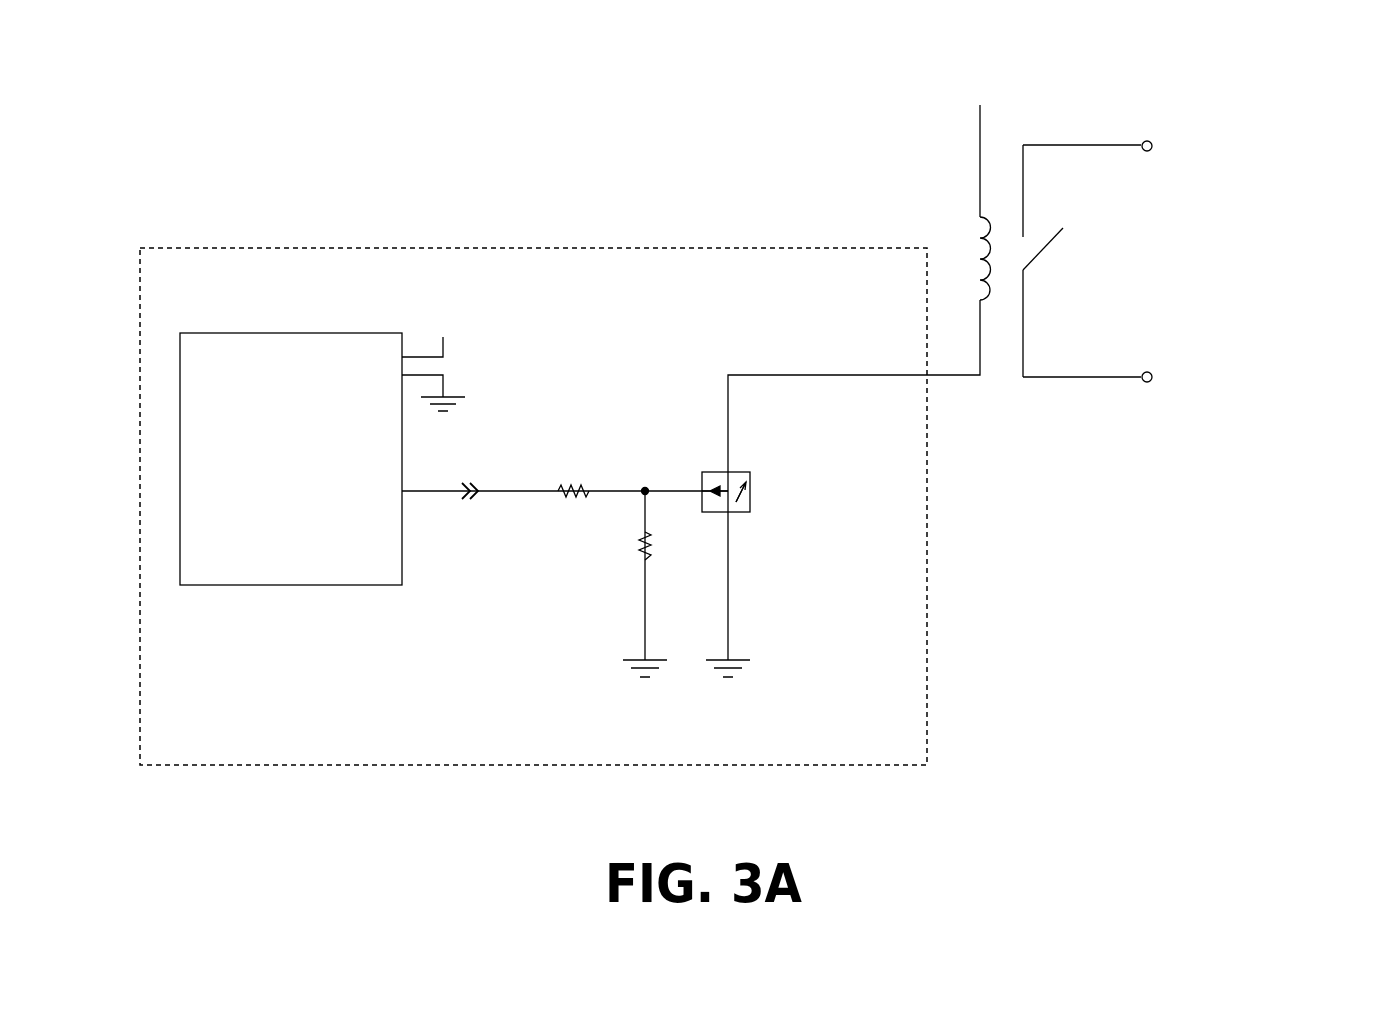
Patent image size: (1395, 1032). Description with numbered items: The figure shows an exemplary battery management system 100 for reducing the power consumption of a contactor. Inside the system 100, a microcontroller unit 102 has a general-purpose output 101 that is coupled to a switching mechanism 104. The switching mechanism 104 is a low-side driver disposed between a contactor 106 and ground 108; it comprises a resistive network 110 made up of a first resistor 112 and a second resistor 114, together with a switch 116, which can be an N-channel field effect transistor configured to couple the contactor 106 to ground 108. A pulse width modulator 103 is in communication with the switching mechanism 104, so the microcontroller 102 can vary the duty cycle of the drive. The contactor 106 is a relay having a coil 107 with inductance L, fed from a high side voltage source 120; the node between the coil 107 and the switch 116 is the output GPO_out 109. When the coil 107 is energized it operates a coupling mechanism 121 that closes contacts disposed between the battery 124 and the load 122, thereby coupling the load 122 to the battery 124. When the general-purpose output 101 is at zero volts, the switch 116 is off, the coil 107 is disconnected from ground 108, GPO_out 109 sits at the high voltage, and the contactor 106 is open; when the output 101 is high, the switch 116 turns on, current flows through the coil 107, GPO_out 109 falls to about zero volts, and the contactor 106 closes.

The battery management system 100 is at (533, 482).
The general-purpose output 101 is at (340, 492).
The microcontroller unit 102 is at (213, 435).
The pulse width modulator 103 is at (698, 464).
The switching mechanism 104 is at (795, 455).
The contactor 106 is at (1124, 261).
The coil 107 is at (977, 270).
The ground 108 is at (688, 705).
The GPO_out 109 is at (983, 433).
The resistive network 110 is at (446, 537).
The first resistor 112 is at (573, 483).
The second resistor 114 is at (633, 553).
The switch 116 is at (746, 518).
The high side voltage source 120 is at (977, 129).
The coupling mechanism 121 is at (1043, 222).
The load 122 is at (1192, 392).
The battery 124 is at (1242, 120).